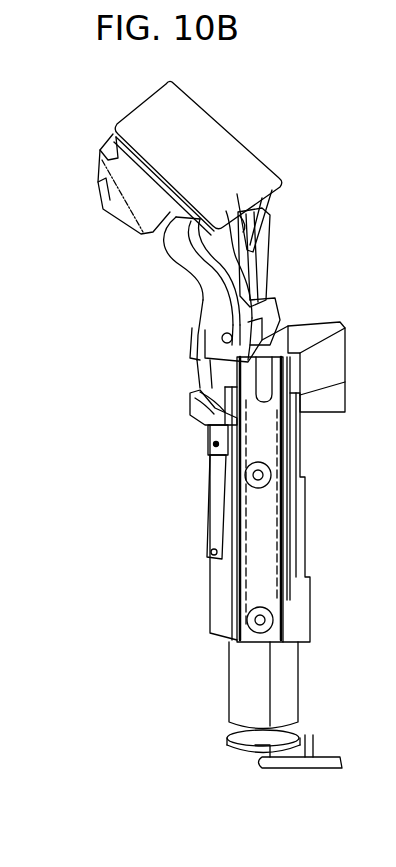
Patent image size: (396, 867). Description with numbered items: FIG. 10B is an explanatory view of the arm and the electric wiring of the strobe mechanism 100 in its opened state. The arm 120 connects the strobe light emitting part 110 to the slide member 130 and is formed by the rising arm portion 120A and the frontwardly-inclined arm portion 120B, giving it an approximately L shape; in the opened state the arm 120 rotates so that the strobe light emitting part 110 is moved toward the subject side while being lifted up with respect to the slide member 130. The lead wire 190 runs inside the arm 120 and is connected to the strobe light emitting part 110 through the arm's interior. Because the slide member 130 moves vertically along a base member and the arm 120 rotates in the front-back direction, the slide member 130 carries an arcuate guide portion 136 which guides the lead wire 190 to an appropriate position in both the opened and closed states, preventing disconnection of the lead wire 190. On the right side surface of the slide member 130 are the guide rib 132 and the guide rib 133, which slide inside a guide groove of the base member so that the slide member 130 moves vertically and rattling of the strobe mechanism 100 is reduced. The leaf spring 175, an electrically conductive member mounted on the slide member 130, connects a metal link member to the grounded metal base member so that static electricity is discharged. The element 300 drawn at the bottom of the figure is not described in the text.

The strobe mechanism 100 is at (312, 192).
The strobe light emitting part 110 is at (135, 192).
The arm 120 is at (110, 277).
The rising arm portion 120A is at (207, 313).
The frontwardly-inclined arm portion 120B is at (192, 232).
The lead wire 190 is at (220, 272).
The guide portion 136 is at (198, 413).
The slide member 130 is at (223, 583).
The leaf spring 175 is at (217, 493).
The guide rib 132 is at (268, 468).
The guide rib 133 is at (270, 615).
The cylinder 300 is at (247, 687).